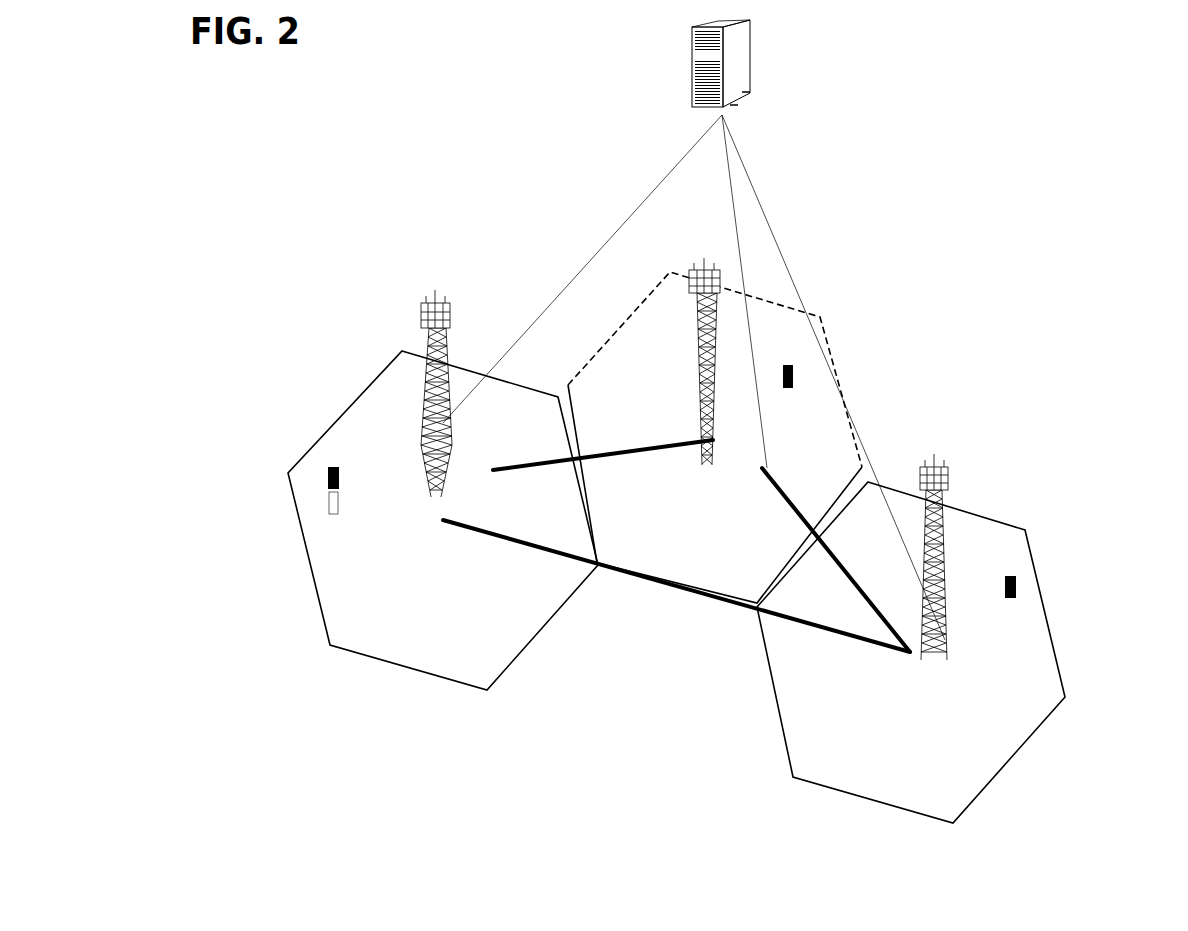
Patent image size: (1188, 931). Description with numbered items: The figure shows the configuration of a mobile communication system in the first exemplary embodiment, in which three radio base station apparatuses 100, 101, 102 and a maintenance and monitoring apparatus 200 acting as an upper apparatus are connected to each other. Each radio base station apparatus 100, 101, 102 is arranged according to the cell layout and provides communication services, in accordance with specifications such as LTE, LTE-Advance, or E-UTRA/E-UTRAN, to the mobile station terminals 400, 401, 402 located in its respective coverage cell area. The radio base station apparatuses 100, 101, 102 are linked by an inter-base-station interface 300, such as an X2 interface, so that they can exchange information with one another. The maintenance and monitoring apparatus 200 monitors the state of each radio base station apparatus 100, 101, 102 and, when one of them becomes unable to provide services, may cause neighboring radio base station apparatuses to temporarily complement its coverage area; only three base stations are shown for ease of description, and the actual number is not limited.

The radio base station apparatus 100 is at (443, 490).
The radio base station apparatus 101 is at (715, 430).
The radio base station apparatus 102 is at (911, 638).
The maintenance and monitoring apparatus 200 is at (743, 62).
The inter-base-station interface 300 is at (596, 455).
The mobile station terminal 400 is at (327, 500).
The mobile station terminal 401 is at (790, 393).
The mobile station terminal 402 is at (1017, 605).